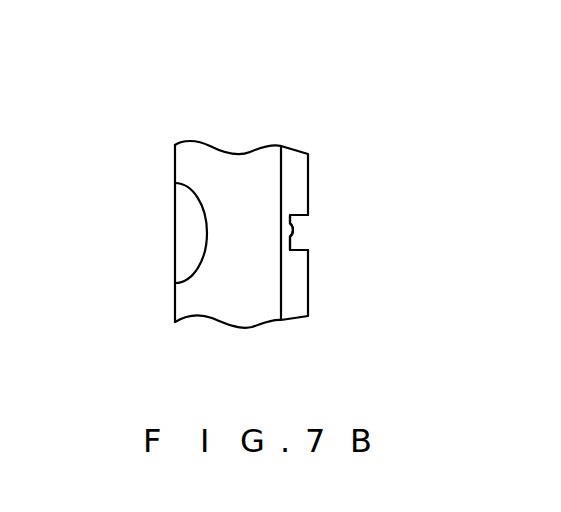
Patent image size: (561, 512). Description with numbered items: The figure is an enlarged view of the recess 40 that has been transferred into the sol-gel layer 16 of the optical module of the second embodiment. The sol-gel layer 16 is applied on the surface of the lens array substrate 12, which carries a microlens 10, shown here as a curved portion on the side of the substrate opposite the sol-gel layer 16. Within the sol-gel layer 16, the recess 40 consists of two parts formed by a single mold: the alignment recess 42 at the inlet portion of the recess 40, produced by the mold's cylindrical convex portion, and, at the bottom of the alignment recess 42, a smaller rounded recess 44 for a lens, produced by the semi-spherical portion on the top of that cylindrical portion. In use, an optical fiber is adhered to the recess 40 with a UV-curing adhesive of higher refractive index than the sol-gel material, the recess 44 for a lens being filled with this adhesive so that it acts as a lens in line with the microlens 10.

The microlens 10 is at (187, 238).
The lens array substrate 12 is at (222, 157).
The sol-gel layer 16 is at (295, 157).
The recess 40 is at (335, 256).
The alignment recess 42 is at (300, 220).
The recess for a lens 44 is at (300, 232).